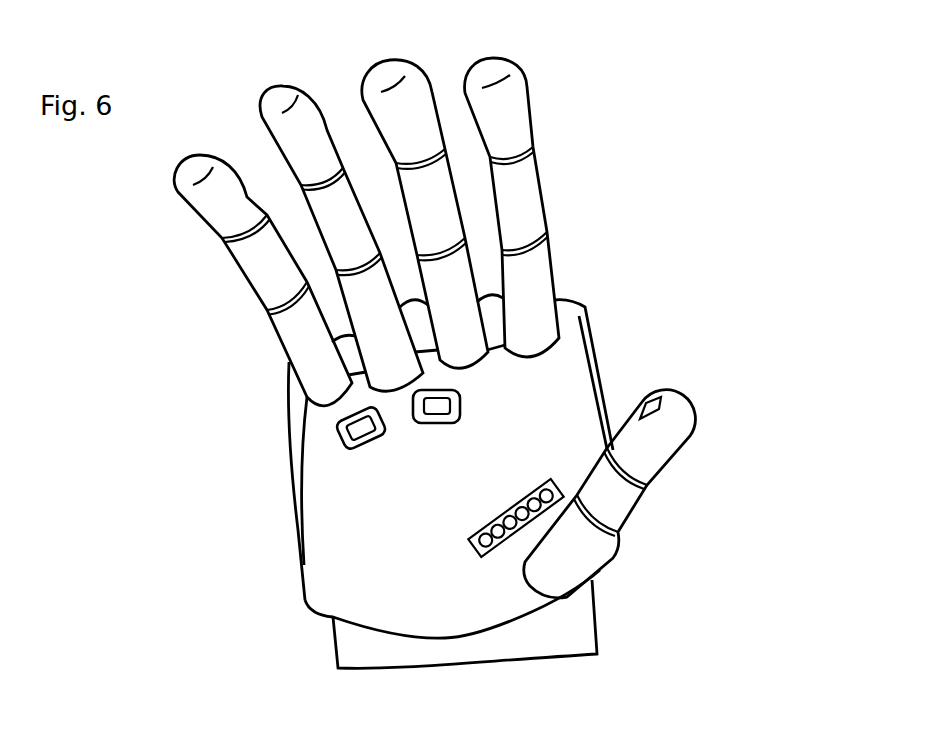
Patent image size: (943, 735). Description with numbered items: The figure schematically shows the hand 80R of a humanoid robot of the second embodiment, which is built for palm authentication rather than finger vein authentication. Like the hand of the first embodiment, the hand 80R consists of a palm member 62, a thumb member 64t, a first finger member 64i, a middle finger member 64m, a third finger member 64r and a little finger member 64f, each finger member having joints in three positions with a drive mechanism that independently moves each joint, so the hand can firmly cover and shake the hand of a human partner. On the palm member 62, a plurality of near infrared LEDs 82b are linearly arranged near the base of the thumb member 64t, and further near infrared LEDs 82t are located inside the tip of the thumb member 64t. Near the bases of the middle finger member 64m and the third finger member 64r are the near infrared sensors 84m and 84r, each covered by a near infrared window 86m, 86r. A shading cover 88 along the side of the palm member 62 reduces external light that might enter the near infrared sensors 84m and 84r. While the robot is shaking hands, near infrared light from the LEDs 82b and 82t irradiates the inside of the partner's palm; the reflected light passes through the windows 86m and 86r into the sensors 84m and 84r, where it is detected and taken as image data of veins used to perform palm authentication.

The palm member 62 is at (337, 552).
The little finger member 64f is at (223, 188).
The third finger member 64r is at (295, 90).
The middle finger member 64m is at (396, 62).
The first finger member 64i is at (513, 93).
The thumb member 64t is at (677, 403).
The hand 80R is at (645, 186).
The near infrared LED 82b is at (551, 484).
The near infrared LED 82t is at (650, 397).
The near infrared sensor 84r is at (366, 432).
The near infrared sensor 84m is at (438, 414).
The near infrared window 86r is at (343, 438).
The near infrared window 86m is at (463, 406).
The shading cover 88 is at (282, 394).